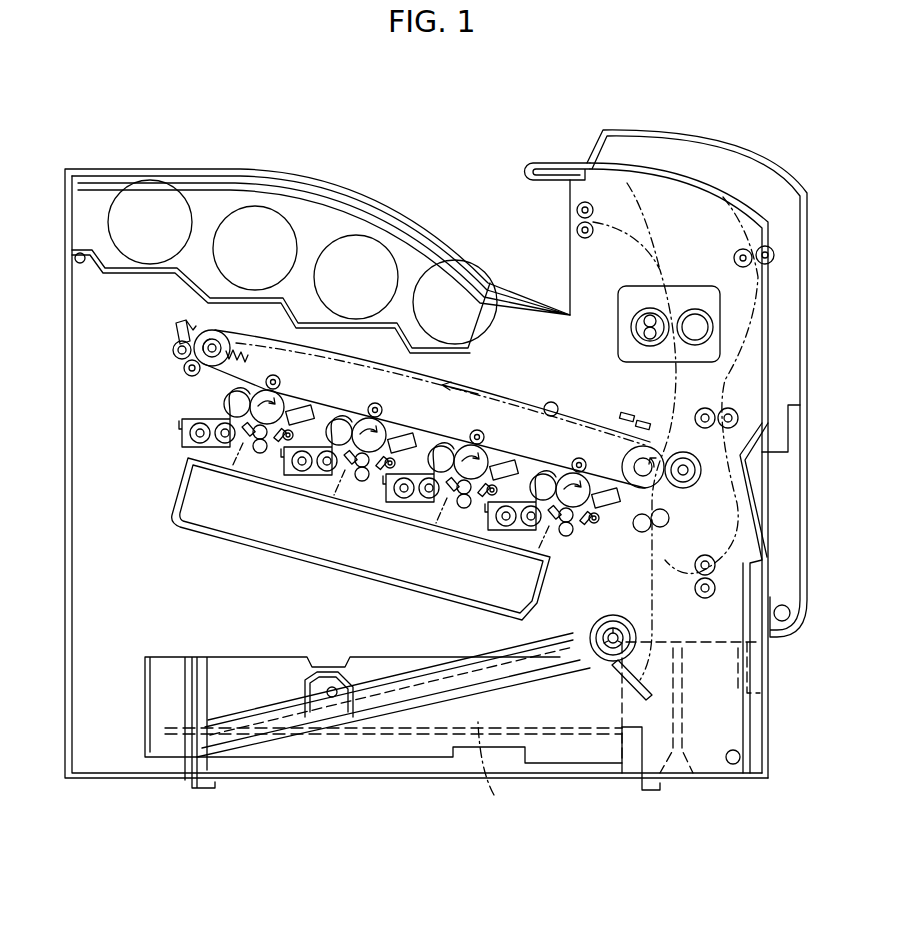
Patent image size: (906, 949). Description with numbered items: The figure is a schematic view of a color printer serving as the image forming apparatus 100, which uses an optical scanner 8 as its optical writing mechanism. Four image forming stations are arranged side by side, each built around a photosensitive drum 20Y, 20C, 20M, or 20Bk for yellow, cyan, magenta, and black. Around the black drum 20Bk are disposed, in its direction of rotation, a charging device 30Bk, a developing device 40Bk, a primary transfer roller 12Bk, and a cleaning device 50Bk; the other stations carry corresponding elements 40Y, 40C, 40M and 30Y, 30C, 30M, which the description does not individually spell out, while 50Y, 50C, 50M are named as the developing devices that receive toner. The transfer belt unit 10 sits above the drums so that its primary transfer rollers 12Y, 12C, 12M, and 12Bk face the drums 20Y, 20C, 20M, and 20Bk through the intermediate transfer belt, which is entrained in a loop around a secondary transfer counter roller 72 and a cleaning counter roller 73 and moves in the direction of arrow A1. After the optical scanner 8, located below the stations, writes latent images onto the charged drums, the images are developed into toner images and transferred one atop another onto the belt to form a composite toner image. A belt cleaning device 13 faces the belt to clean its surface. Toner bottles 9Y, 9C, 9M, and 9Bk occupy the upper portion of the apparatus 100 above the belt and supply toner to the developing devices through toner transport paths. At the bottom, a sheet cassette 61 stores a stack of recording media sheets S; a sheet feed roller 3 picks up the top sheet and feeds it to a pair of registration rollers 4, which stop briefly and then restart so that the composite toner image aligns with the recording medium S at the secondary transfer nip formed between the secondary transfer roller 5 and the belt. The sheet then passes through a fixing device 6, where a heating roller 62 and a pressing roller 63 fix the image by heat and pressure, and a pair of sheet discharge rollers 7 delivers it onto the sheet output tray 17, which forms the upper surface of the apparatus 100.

The image forming apparatus 100 is at (325, 157).
The toner bottle 9Y is at (150, 196).
The toner bottle 9C is at (222, 230).
The toner bottle 9M is at (344, 246).
The toner bottle 9Bk is at (434, 275).
The sheet output tray 17 is at (412, 208).
The pair of sheet discharge rollers 7 is at (576, 226).
The fixing device 6 is at (618, 305).
The heating roller 62 is at (636, 330).
The pressing roller 63 is at (713, 315).
The cleaning counter roller 73 is at (220, 335).
The secondary transfer counter roller 72 is at (640, 484).
The belt cleaning device 13 is at (172, 350).
The transfer belt unit 10 is at (529, 385).
The arrow A1 is at (467, 377).
The photosensitive drum 20Y is at (267, 390).
The primary transfer roller 12Y is at (290, 372).
The developing device (yellow) 40Y is at (182, 433).
The developing device 50Y is at (299, 406).
The primary transfer roller (yellow) 30Y is at (265, 449).
The photosensitive drum 20C is at (386, 416).
The primary transfer roller 12C is at (377, 403).
The developing device (cyan) 40C is at (339, 420).
The developing device 50C is at (400, 432).
The primary transfer roller (cyan) 30C is at (365, 475).
The photosensitive drum 20M is at (488, 445).
The primary transfer roller 12M is at (477, 430).
The developing device (magenta) 40M is at (441, 450).
The developing device 50M is at (503, 460).
The primary transfer roller (magenta) 30M is at (467, 501).
The photosensitive drum 20Bk is at (590, 476).
The primary transfer roller 12Bk is at (580, 458).
The developing device 40Bk is at (545, 474).
The cleaning device 50Bk is at (607, 510).
The charging device 30Bk is at (567, 535).
The secondary transfer roller 5 is at (695, 488).
The pair of registration rollers 4 is at (668, 528).
The sheet feed roller 3 is at (622, 616).
The optical scanner 8 is at (545, 593).
The recording medium S is at (480, 653).
The sheet cassette 61 is at (393, 772).